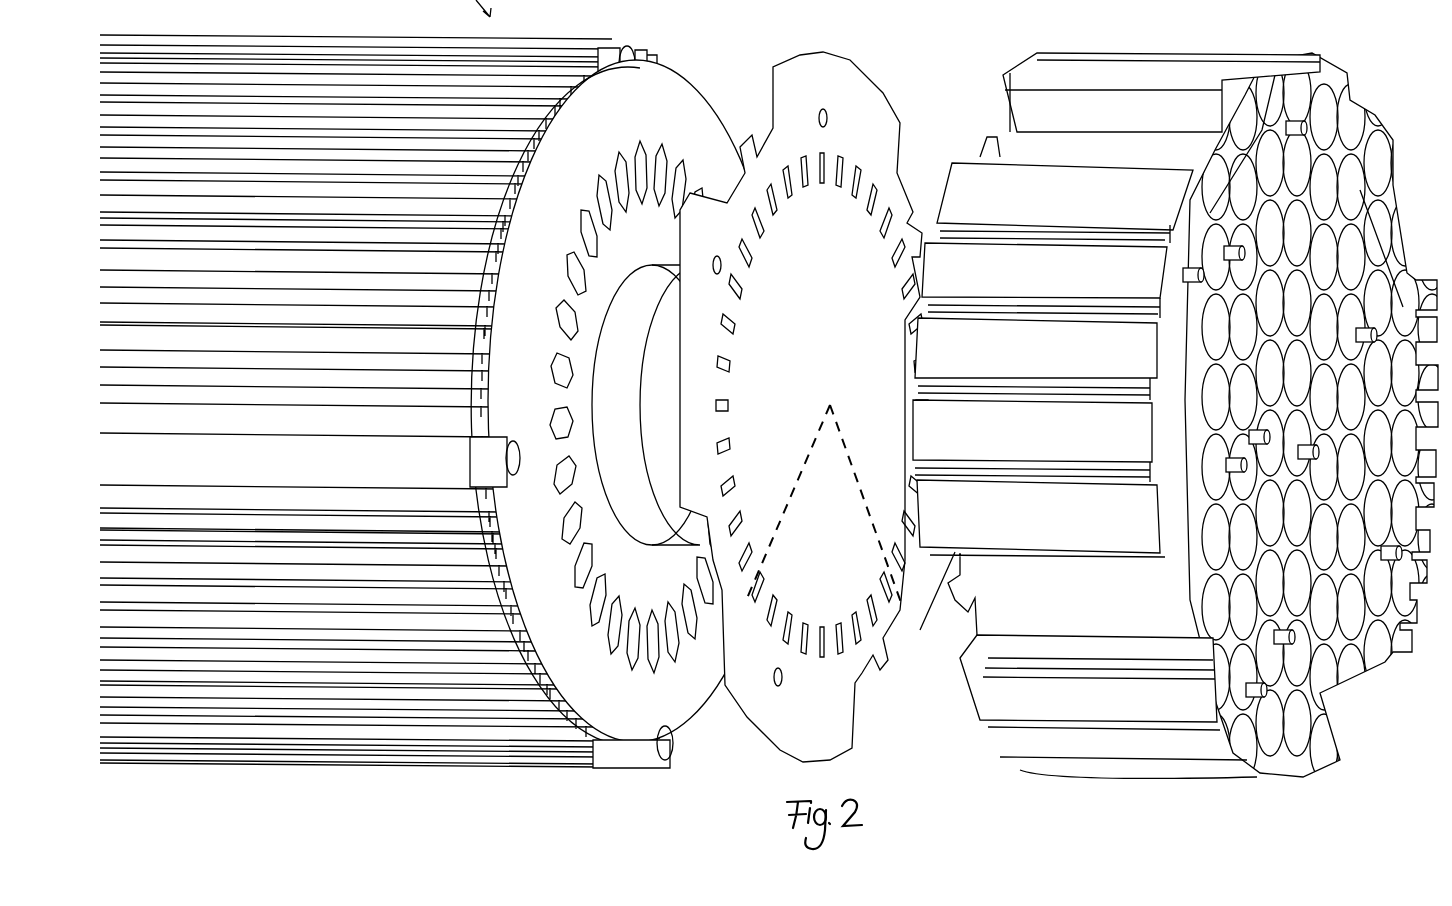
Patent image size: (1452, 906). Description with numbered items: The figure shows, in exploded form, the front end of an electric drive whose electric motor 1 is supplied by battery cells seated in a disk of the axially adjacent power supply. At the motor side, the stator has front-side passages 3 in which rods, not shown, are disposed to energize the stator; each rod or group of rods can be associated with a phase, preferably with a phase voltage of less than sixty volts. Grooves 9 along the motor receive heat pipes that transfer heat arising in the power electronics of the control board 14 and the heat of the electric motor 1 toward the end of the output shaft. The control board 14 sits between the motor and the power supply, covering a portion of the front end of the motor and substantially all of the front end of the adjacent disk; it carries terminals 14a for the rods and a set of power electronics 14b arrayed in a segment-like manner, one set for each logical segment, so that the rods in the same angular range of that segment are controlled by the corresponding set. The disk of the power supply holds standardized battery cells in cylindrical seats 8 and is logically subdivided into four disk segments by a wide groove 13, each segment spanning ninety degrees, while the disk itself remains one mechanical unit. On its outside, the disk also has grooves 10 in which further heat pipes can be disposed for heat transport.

The electric motor 1 is at (1316, 416).
The stator front-side passages 3 is at (645, 140).
The cylindrical seats 8 is at (1347, 233).
The grooves 9 is at (480, 574).
The grooves 10 is at (1116, 415).
The wide groove 13 is at (1161, 109).
The control board 14 is at (804, 407).
The terminals 14a is at (745, 306).
The set of power electronics 14b is at (824, 506).